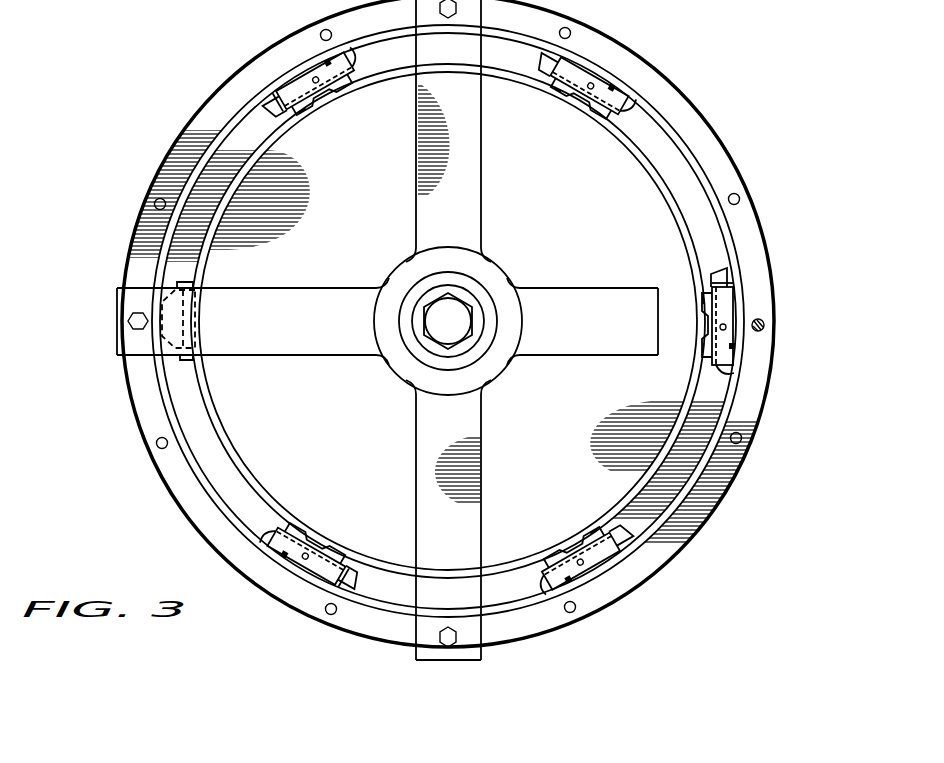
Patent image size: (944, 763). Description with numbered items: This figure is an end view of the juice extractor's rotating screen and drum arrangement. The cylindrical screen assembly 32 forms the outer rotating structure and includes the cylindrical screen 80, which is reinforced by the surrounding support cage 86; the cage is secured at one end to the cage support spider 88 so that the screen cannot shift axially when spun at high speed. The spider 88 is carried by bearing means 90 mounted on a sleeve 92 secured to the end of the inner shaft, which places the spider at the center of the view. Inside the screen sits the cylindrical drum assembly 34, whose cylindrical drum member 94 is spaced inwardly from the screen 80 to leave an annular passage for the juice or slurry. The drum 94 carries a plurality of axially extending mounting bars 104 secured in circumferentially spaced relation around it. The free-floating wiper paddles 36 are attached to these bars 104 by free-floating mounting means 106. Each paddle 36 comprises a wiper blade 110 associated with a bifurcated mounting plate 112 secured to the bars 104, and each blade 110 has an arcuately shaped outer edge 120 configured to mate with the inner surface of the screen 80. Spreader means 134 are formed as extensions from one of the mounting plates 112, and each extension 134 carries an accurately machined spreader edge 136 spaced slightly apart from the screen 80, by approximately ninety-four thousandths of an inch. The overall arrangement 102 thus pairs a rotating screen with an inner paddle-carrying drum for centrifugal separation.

The cylindrical screen assembly 32 is at (762, 218).
The cylindrical drum assembly 34 is at (659, 190).
The wiper paddle 36 is at (177, 362).
The cylindrical screen 80 is at (165, 242).
The support cage 86 is at (728, 137).
The cage support spider 88 is at (260, 297).
The bearing means 90 is at (413, 285).
The sleeve 92 is at (432, 348).
The cylindrical drum member 94 is at (224, 451).
The disc assembly 102 is at (565, 427).
The mounting bar 104 is at (313, 97).
The free-floating mounting means 106 is at (300, 113).
The wiper blade 110 is at (360, 68).
The mounting plate 112 is at (320, 78).
The arcuately shaped outer edge 120 is at (290, 73).
The spreader means 134 is at (258, 118).
The spreader surface or edge 136 is at (273, 92).